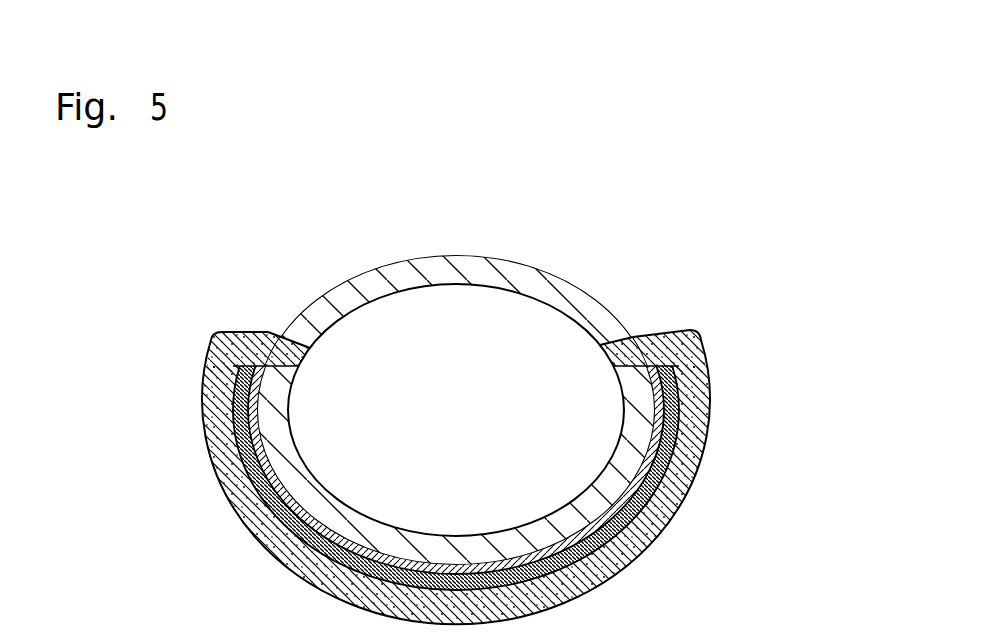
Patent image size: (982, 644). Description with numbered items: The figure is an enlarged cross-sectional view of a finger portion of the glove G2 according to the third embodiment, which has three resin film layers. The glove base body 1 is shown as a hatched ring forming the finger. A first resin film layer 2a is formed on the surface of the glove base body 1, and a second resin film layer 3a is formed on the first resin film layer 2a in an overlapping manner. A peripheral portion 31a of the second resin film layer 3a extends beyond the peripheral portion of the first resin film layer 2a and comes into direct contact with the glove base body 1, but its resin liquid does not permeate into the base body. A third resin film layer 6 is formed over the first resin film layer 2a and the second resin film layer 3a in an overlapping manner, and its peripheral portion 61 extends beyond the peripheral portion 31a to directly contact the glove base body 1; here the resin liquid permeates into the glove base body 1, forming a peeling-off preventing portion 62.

The glove base body 1 is at (458, 262).
The first resin film layer 2a is at (633, 497).
The second resin film layer 3a is at (668, 448).
The third resin film layer 6 is at (272, 562).
The peripheral portion of the second resin film layer 31a is at (240, 372).
The peripheral portion of the third resin film layer 61 is at (238, 332).
The peeling-off preventing portion 62 is at (300, 348).
The glove G2 is at (457, 367).